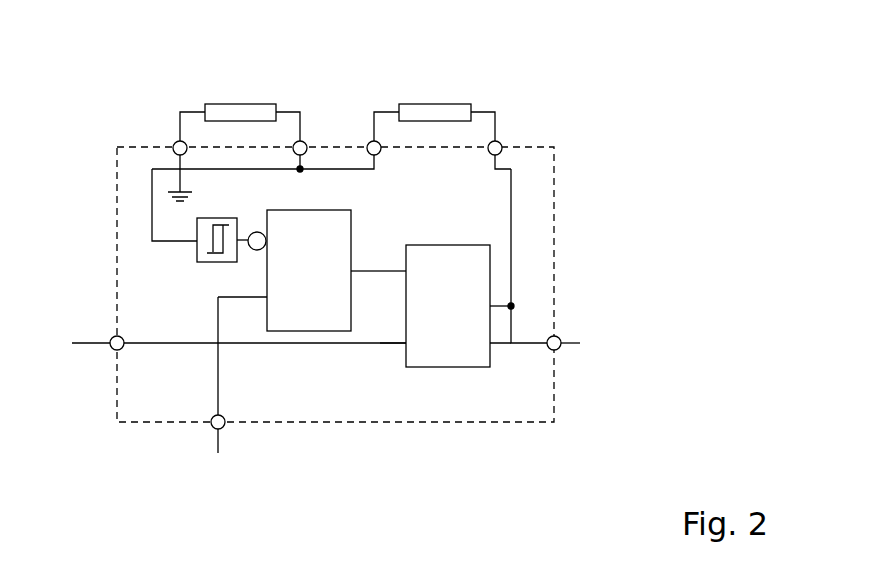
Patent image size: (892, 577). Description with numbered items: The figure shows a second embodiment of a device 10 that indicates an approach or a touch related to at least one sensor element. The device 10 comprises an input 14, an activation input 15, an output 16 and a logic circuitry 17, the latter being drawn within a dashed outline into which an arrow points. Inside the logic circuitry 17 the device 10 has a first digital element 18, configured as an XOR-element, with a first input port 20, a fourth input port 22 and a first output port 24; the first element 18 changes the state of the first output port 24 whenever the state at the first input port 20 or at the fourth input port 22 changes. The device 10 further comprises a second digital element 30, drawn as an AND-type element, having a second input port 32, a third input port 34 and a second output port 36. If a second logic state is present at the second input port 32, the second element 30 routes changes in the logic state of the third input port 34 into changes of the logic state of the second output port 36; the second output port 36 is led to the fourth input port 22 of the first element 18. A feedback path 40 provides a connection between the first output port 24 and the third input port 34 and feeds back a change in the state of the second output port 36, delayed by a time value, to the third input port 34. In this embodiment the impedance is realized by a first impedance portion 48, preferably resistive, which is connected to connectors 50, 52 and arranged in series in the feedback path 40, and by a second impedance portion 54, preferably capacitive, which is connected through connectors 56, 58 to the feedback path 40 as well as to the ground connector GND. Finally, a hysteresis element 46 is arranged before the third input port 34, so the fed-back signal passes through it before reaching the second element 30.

The device 10 is at (554, 146).
The input 14 is at (112, 346).
The activation input 15 is at (211, 426).
The output 16 is at (557, 350).
The logic circuitry 17 is at (537, 196).
The first digital element 18 is at (453, 367).
The first input port 20 is at (398, 345).
The fourth input port 22 is at (405, 271).
The first output port 24 is at (495, 306).
The second digital element 30 is at (300, 331).
The second input port 32 is at (260, 298).
The third input port 34 is at (250, 250).
The second output port 36 is at (352, 271).
The feedback path 40 is at (512, 221).
The hysteresis element 46 is at (197, 250).
The first impedance portion 48 is at (430, 104).
The connector 50 is at (500, 141).
The connector 52 is at (372, 141).
The second impedance portion 54 is at (245, 104).
The connector 56 is at (305, 141).
The connector 58 is at (174, 143).